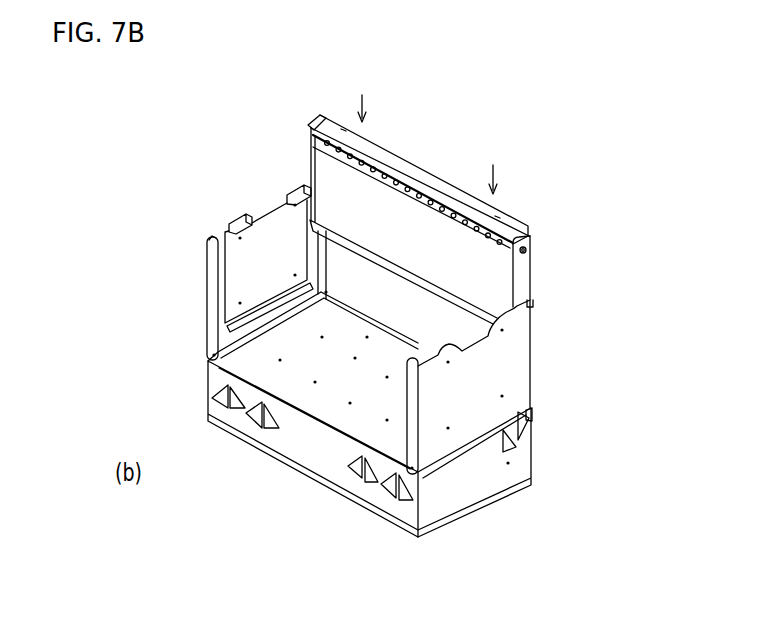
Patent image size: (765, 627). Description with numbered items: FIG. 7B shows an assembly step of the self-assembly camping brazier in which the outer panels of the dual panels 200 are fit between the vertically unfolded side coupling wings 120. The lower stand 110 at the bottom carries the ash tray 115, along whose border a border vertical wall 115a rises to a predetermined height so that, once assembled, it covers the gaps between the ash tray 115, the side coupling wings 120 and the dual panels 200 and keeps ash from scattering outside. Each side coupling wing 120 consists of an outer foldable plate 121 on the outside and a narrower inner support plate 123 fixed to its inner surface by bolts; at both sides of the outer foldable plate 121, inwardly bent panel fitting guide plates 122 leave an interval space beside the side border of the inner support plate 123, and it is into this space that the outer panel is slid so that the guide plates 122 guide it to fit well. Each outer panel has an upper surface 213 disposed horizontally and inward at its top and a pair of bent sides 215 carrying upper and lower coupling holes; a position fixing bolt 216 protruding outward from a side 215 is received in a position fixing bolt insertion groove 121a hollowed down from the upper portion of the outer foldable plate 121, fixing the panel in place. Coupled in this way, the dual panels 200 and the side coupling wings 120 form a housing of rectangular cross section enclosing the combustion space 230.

The lower stand 110 is at (352, 406).
The ash tray 115 is at (367, 452).
The border vertical wall 115a is at (307, 410).
The side coupling wing 120 is at (357, 329).
The outer foldable plate 121 is at (213, 238).
The position fixing bolt insertion groove 121a is at (533, 307).
The panel fitting guide plate 122 is at (212, 288).
The inner support plate 123 is at (243, 265).
The dual panel 200 is at (469, 213).
The upper surface 213 is at (404, 164).
The side 215 is at (571, 274).
The position fixing bolt 216 is at (530, 251).
The combustion space 230 is at (290, 348).